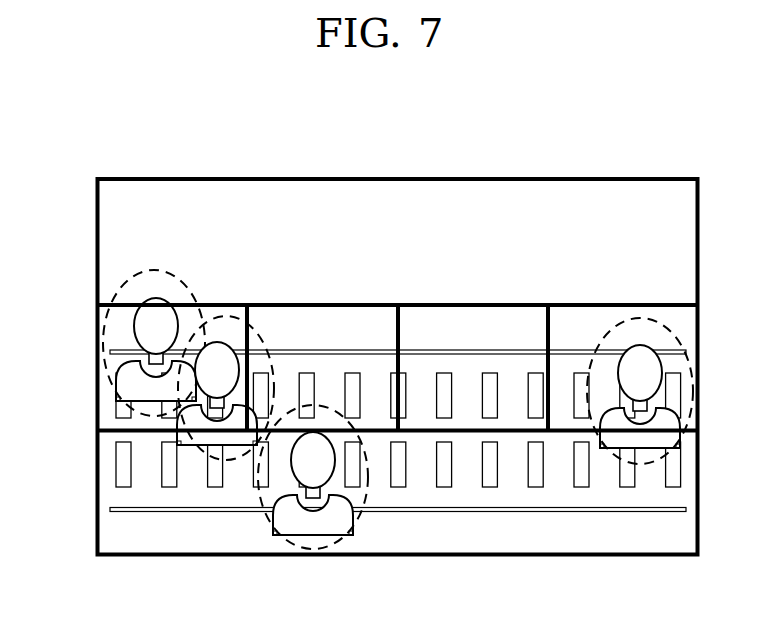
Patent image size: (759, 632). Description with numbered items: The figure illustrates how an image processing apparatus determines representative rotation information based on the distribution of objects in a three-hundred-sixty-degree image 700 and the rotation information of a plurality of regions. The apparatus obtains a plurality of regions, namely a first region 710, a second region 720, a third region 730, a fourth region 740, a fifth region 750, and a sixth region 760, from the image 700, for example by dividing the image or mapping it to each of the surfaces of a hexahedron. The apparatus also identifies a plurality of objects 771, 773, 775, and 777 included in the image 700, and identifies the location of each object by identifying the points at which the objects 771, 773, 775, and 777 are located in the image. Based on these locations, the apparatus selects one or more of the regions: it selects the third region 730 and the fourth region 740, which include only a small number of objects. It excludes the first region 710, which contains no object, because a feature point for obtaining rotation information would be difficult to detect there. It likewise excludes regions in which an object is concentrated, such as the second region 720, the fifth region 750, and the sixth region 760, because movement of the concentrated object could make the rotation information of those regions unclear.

The 360-degree image 700 is at (628, 178).
The first region 710 is at (203, 190).
The second region 720 is at (190, 318).
The third region 730 is at (321, 318).
The fourth region 740 is at (470, 318).
The fifth region 750 is at (600, 318).
The sixth region 760 is at (206, 543).
The object 771 is at (123, 295).
The object 773 is at (238, 318).
The object 775 is at (313, 550).
The object 777 is at (642, 462).